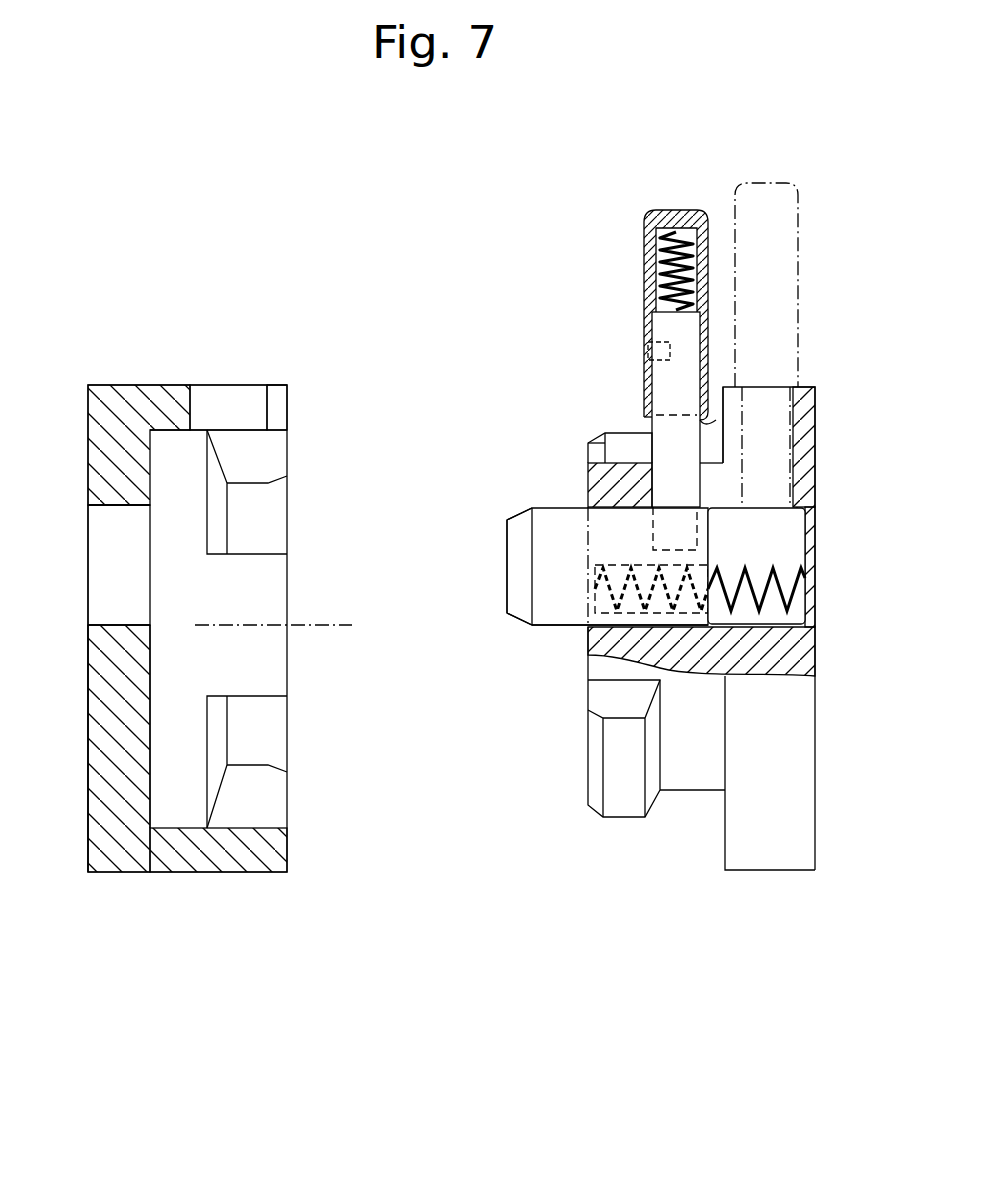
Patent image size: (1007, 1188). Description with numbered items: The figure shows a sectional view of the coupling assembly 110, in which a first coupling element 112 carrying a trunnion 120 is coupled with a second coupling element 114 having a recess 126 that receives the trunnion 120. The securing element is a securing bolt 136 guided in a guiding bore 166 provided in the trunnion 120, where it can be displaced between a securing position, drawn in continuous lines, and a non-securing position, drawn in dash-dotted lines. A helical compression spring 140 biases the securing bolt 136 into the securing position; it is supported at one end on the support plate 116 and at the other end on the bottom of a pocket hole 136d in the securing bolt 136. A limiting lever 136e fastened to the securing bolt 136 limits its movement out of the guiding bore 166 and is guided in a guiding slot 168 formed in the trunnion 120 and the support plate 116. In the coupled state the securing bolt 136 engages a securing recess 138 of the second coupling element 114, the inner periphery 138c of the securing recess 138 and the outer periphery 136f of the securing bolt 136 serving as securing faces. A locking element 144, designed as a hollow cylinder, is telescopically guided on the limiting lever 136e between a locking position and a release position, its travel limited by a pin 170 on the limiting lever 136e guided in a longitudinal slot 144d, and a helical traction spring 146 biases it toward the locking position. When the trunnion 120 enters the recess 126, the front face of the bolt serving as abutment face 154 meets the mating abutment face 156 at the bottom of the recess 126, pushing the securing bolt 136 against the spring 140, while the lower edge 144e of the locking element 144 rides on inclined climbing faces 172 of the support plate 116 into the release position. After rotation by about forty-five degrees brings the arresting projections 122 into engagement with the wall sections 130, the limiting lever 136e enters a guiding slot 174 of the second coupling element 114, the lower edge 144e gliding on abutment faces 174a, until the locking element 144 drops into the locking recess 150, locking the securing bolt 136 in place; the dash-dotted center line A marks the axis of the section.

The coupling assembly 110 is at (432, 243).
The first coupling element 112 is at (765, 878).
The second coupling element 114 is at (212, 880).
The support plate 116 is at (800, 845).
The trunnion 120 is at (692, 747).
The arresting projections 122 is at (616, 805).
The recess 126 is at (175, 728).
The wall sections 130 is at (272, 510).
The securing bolt 136 is at (540, 602).
The pocket hole 136d is at (607, 557).
The limiting lever 136e is at (660, 430).
The outer periphery 136f is at (563, 632).
The securing recess 138 is at (115, 572).
The inner periphery 138c is at (103, 509).
The helical compression spring 140 is at (795, 576).
The locking element 144 is at (645, 245).
The longitudinal slot 144d is at (650, 375).
The lower edge 144e is at (716, 420).
The helical traction spring 146 is at (683, 245).
The locking recess 150 is at (233, 395).
The abutment face 154 is at (505, 533).
The mating abutment face 156 is at (152, 660).
The guiding bore 166 is at (606, 514).
The guiding slot 168 is at (718, 470).
The pin 170 is at (648, 345).
The inclined climbing faces 172 is at (737, 403).
The guiding slot 174 is at (285, 410).
The abutment faces 174a is at (281, 384).
The axis A is at (335, 627).